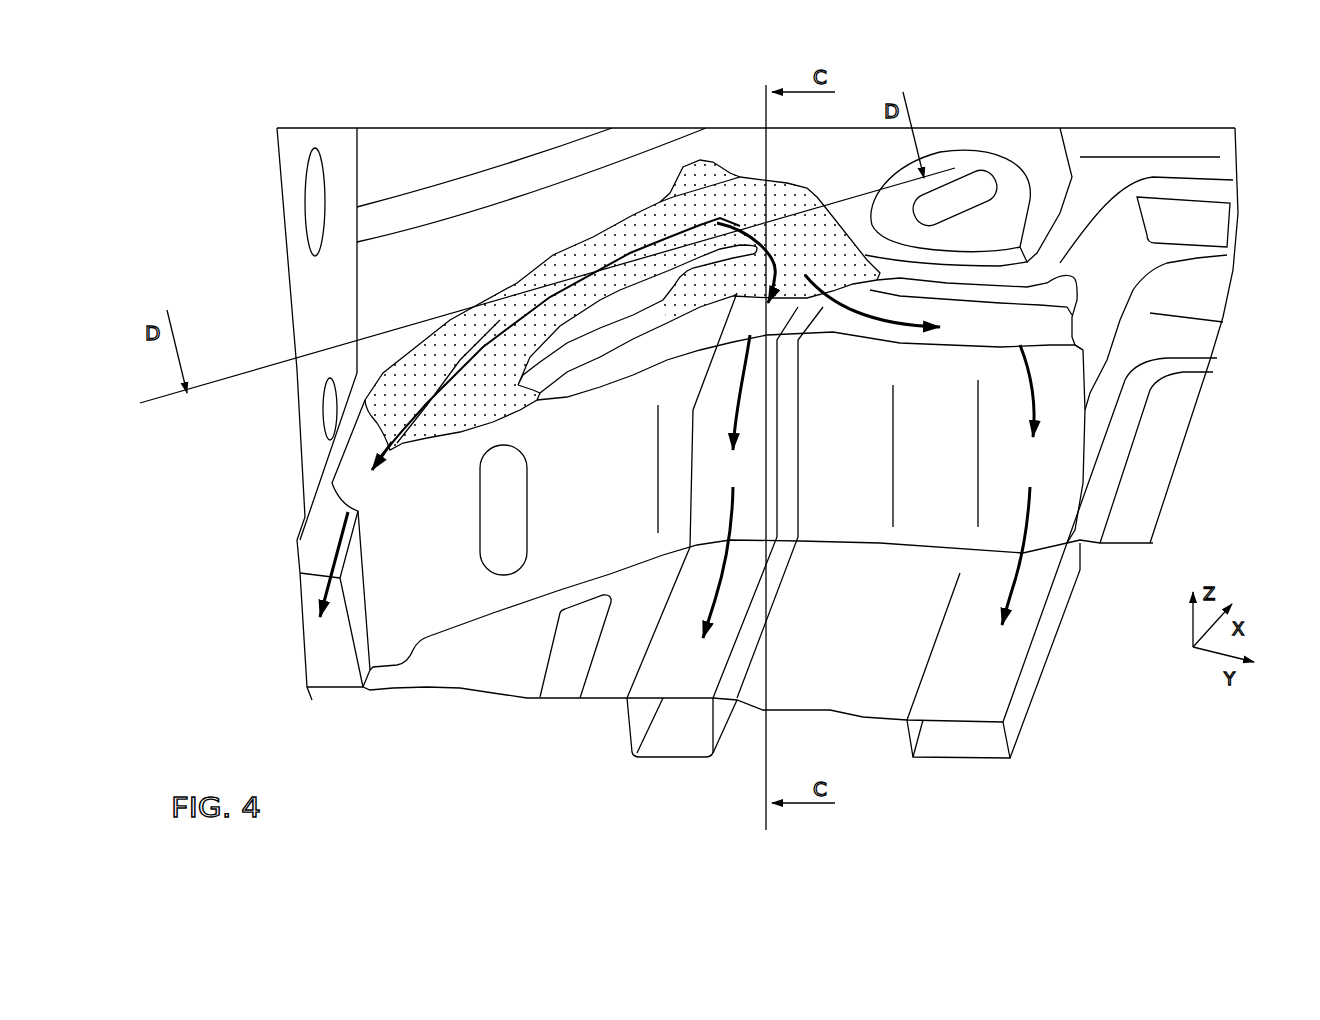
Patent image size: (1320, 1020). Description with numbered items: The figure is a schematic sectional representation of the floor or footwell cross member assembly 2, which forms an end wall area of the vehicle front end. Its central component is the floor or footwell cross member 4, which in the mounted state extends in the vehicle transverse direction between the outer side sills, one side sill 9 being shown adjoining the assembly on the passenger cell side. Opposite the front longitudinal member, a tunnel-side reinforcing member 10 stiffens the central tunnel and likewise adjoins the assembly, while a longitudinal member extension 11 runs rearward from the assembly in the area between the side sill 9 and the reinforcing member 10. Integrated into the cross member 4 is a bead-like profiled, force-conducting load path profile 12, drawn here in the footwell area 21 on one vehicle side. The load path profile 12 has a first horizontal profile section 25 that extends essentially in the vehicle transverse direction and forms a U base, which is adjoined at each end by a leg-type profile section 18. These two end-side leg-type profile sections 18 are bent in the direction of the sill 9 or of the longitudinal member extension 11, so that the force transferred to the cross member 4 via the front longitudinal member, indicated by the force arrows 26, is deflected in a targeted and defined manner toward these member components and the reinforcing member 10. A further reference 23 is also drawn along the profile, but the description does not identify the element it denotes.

The cross member assembly 2 is at (533, 111).
The cross member 4 is at (586, 497).
The side sill 9 is at (342, 643).
The reinforcing member 10 is at (952, 748).
The longitudinal member extension 11 is at (672, 738).
The load path profile 12 is at (591, 245).
The leg-type profile section 18 is at (445, 422).
The footwell area 21 is at (502, 660).
The center line of cross member 23 is at (639, 249).
The first horizontal profile section 25 is at (597, 285).
The force arrow 26 is at (334, 548).